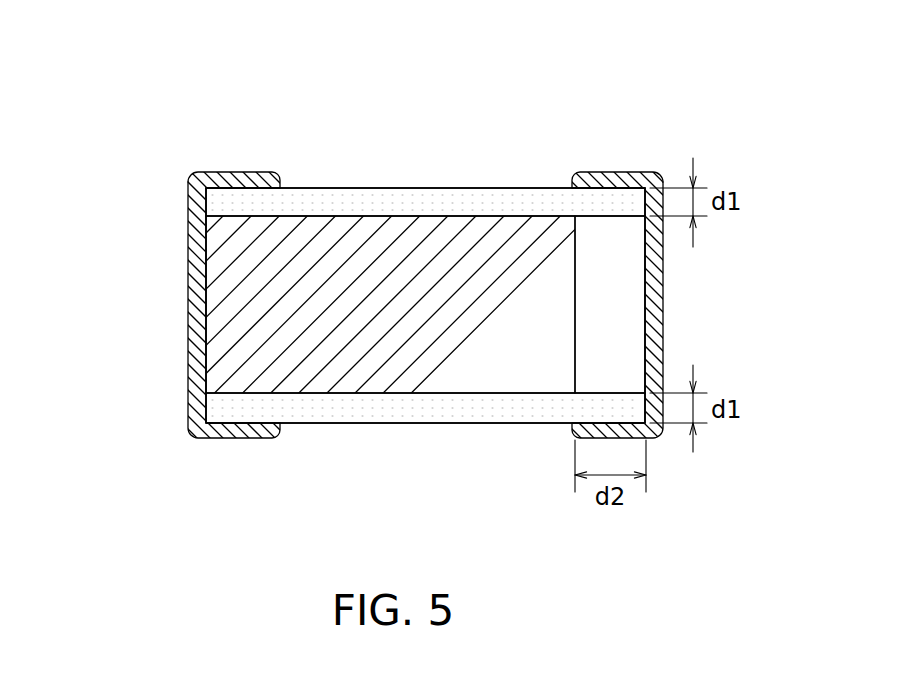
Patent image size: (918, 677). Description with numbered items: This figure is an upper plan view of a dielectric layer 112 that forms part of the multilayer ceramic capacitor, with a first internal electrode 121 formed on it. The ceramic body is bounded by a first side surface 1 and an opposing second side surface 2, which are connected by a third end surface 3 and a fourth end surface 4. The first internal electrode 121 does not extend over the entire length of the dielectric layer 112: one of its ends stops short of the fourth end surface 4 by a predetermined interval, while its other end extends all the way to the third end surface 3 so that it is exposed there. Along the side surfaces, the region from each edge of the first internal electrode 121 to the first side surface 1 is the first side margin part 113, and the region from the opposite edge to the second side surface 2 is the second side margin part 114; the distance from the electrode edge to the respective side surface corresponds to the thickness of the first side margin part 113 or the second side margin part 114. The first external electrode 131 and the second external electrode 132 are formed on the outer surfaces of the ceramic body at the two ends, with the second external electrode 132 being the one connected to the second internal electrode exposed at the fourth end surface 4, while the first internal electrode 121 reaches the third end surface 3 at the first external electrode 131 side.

The first side surface 1 is at (459, 298).
The second side surface 2 is at (410, 360).
The third end surface 3 is at (267, 258).
The fourth end surface 4 is at (610, 253).
The dielectric layer 112 is at (630, 338).
The first side margin part 113 is at (215, 200).
The second side margin part 114 is at (217, 410).
The first internal electrode 121 is at (392, 376).
The first external electrode 131 is at (237, 172).
The second external electrode 132 is at (618, 173).